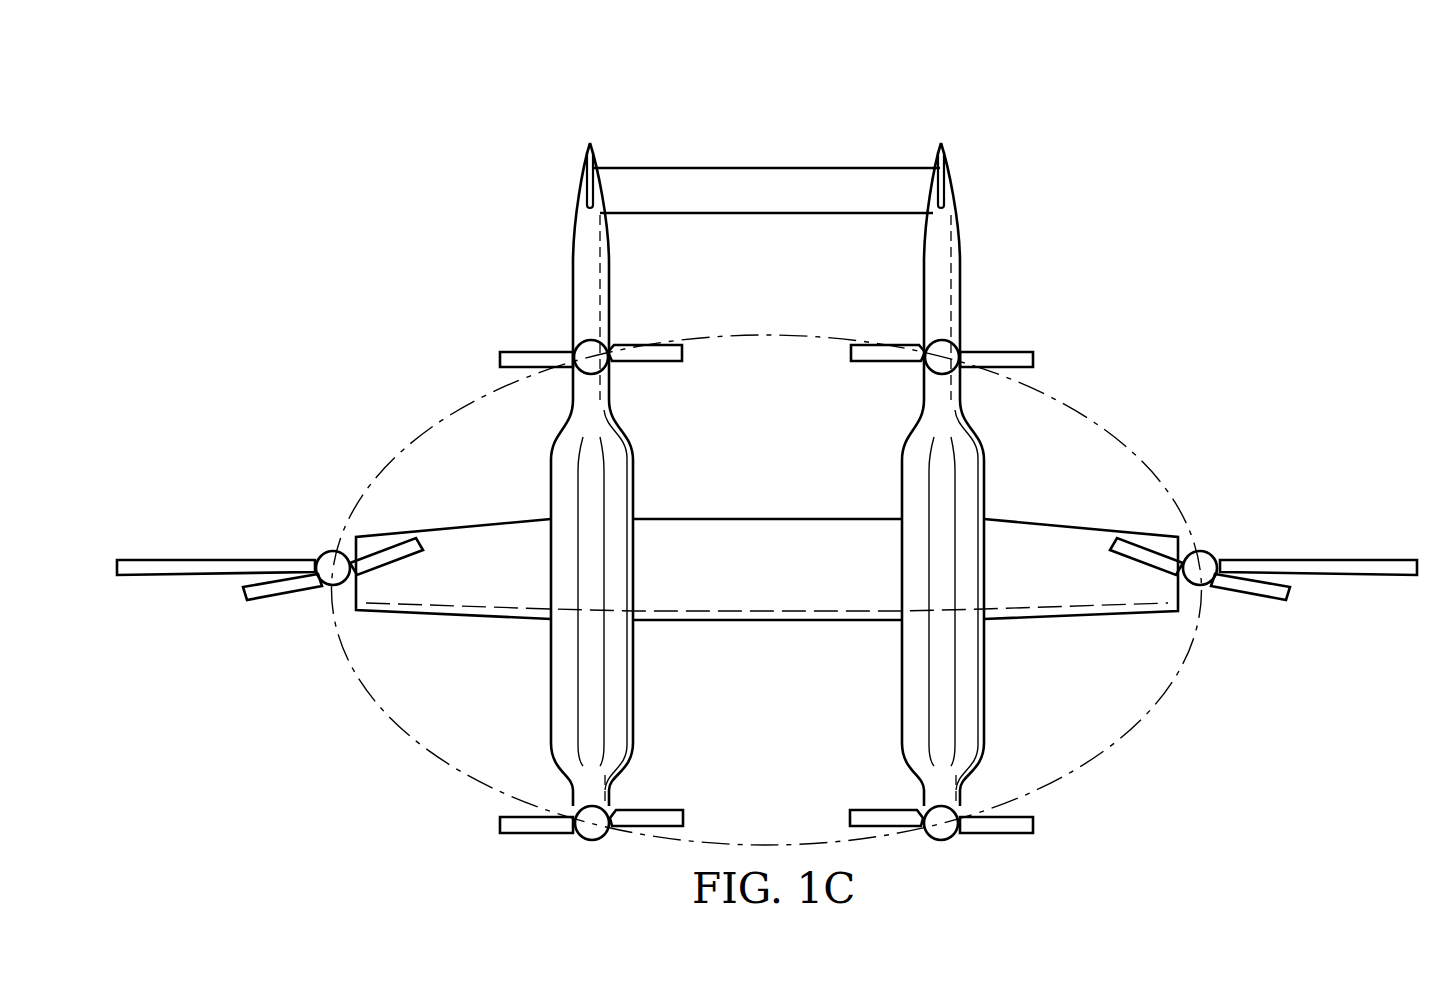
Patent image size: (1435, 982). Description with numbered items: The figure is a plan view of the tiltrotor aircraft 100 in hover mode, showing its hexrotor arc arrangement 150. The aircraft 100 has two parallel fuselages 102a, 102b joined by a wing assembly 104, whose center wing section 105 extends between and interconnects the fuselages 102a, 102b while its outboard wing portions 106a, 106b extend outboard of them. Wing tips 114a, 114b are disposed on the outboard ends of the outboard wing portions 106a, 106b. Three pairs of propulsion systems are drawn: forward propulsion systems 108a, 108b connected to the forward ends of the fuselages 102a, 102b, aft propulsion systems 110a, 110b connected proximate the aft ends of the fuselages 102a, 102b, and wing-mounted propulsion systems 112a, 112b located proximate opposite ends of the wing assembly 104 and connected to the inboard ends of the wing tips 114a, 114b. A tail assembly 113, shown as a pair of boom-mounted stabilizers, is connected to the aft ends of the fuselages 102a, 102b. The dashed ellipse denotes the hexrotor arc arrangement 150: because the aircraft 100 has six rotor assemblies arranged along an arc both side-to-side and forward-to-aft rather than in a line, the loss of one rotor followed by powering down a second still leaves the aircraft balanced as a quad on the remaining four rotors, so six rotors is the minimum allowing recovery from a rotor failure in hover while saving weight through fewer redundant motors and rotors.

The tiltrotor aircraft 100 is at (307, 120).
The fuselage 102a is at (550, 492).
The fuselage 102b is at (985, 492).
The wing assembly 104 is at (752, 505).
The center wing section 105 is at (767, 620).
The outboard wing portion 106a is at (453, 620).
The outboard wing portion 106b is at (1080, 620).
The forward propulsion system 108a is at (590, 850).
The forward propulsion system 108b is at (943, 850).
The aft propulsion system 110a is at (560, 341).
The aft propulsion system 110b is at (973, 341).
The wing-mounted propulsion system 112a is at (324, 538).
The wing-mounted propulsion system 112b is at (1208, 535).
The tail assembly 113 is at (773, 153).
The wing tip 114a is at (200, 558).
The wing tip 114b is at (1333, 558).
The hexrotor arc arrangement 150 is at (1090, 418).